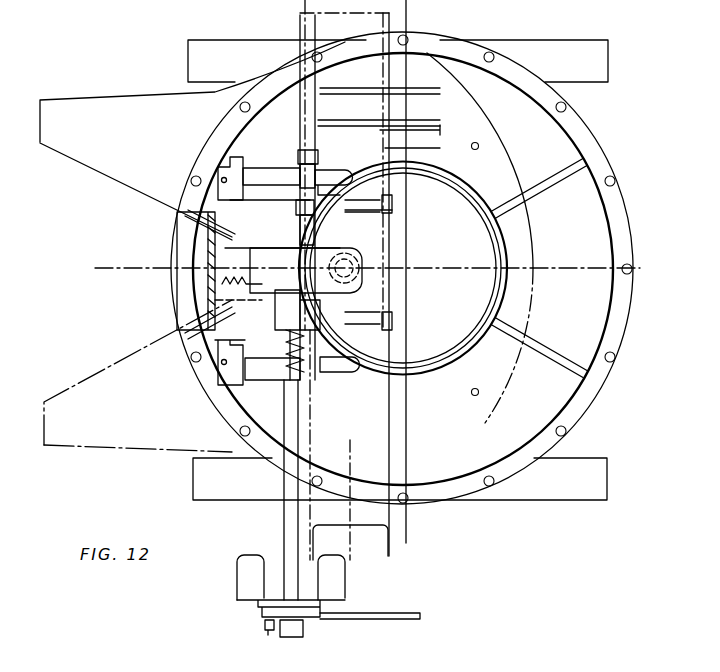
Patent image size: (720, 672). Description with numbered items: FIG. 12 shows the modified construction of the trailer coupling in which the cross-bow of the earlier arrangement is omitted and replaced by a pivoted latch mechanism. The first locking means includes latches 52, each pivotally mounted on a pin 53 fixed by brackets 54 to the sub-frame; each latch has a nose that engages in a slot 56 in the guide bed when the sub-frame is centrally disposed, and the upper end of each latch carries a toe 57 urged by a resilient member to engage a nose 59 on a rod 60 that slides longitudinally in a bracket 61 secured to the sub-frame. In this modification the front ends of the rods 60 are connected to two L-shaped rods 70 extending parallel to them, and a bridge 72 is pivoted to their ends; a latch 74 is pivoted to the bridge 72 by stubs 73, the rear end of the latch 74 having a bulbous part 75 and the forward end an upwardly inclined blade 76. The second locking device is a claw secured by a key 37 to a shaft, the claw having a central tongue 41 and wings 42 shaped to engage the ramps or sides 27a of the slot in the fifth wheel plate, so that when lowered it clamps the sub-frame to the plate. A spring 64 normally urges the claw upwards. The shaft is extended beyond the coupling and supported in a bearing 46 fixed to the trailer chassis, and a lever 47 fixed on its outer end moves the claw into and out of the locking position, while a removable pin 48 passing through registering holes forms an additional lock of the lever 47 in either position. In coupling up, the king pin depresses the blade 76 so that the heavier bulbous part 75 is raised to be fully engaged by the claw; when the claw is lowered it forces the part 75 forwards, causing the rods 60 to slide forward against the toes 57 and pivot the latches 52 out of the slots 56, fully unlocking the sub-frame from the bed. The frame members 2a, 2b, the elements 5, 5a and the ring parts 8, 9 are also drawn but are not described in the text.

The upright frame member 2a is at (352, 80).
The upright frame member 2b is at (332, 75).
The door 5 is at (401, 293).
The door port 5a is at (402, 208).
The annular ring 8 is at (466, 192).
The ring flange 9 is at (478, 214).
The ramps or sides of the slot 27a is at (118, 178).
The key 37 is at (284, 410).
The central tongue 41 is at (186, 276).
The wings 42 is at (195, 228).
The bearing 46 is at (303, 630).
The lever 47 is at (404, 618).
The removable pin 48 is at (265, 628).
The latches 52 is at (304, 168).
The pin 53 is at (368, 197).
The brackets 54 is at (300, 146).
The slot 56 is at (280, 168).
The toe 57 is at (400, 148).
The nose 59 is at (398, 130).
The rod 60 is at (328, 172).
The bracket 61 is at (258, 170).
The spring 64 is at (258, 280).
The L-shaped rods 70 is at (236, 199).
The bridge 72 is at (296, 208).
The stubs 73 is at (300, 232).
The latch 74 is at (318, 252).
The bulbous part 75 is at (232, 246).
The blade 76 is at (352, 285).